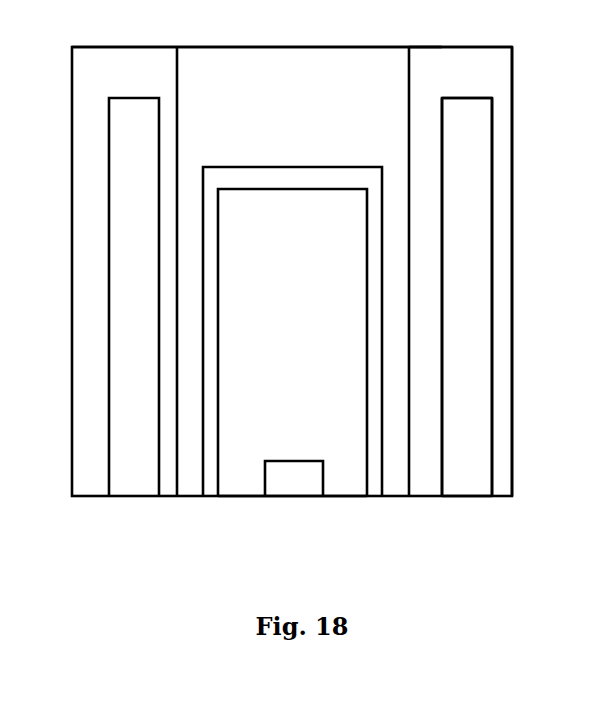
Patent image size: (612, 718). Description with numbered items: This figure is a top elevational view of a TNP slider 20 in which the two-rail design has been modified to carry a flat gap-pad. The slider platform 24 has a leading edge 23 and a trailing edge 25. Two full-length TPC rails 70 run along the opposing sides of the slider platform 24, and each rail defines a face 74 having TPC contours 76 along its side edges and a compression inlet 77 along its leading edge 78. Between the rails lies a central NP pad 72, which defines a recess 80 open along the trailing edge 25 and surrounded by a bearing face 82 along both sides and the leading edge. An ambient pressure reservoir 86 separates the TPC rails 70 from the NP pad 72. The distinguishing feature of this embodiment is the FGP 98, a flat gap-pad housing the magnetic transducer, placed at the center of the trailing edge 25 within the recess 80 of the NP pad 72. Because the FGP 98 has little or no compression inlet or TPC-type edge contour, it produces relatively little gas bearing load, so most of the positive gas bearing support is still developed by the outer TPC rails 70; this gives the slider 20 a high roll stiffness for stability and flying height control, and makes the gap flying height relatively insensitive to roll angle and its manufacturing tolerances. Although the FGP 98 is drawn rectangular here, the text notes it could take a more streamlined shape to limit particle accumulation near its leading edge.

The TNP slider 20 is at (40, 274).
The leading edge 23 is at (291, 47).
The slider platform 24 is at (512, 228).
The trailing edge 25 is at (192, 483).
The TPC rails 70 is at (136, 496).
The NP pad 72 is at (354, 496).
The face 74 is at (468, 431).
The TPC contours 76 is at (423, 352).
The compression inlet 77 is at (460, 62).
The leading edge 78 is at (467, 98).
The recess 80 is at (243, 483).
The bearing face 82 is at (213, 483).
The ambient pressure reservoir 86 is at (396, 483).
The FGP 98 is at (296, 483).